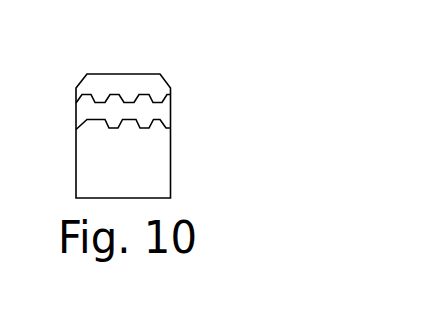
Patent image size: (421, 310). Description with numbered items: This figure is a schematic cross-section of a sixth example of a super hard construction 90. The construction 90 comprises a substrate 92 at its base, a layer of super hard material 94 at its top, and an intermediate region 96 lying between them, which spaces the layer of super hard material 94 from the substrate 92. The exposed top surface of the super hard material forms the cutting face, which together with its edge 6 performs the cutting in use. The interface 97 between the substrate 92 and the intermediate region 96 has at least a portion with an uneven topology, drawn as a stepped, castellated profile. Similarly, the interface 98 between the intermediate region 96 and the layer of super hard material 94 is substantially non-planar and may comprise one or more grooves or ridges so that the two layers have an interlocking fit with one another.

The super hard construction 90 is at (138, 108).
The substrate 92 is at (162, 159).
The layer of super hard material 94 is at (157, 87).
The edge 6 is at (163, 91).
The intermediate region 96 is at (81, 113).
The interface 97 is at (162, 128).
The interface 98 is at (162, 100).